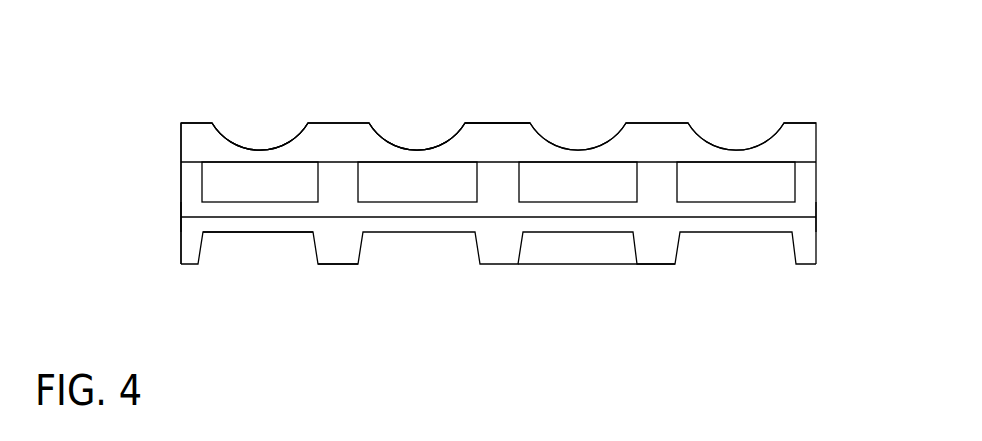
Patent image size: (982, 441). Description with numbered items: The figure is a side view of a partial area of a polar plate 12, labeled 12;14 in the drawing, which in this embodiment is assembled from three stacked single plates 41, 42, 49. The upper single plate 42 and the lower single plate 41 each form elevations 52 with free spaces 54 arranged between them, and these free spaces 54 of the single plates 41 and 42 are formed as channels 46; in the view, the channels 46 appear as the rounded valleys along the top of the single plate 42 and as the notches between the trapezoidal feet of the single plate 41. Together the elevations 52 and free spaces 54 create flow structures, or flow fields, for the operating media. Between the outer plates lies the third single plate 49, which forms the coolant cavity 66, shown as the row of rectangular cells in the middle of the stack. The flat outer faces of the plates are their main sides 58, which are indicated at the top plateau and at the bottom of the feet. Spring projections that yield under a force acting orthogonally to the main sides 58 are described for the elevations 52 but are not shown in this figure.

The polar plate 12 is at (536, 143).
The structural element 14 is at (817, 102).
The single plate 41 is at (804, 248).
The single plate 42 is at (802, 140).
The channels 46 is at (417, 130).
The third single plate 49 is at (800, 205).
The elevations 52 is at (190, 145).
The free spaces 54 is at (262, 183).
The main sides 58 is at (522, 105).
The coolant cavity 66 is at (775, 182).